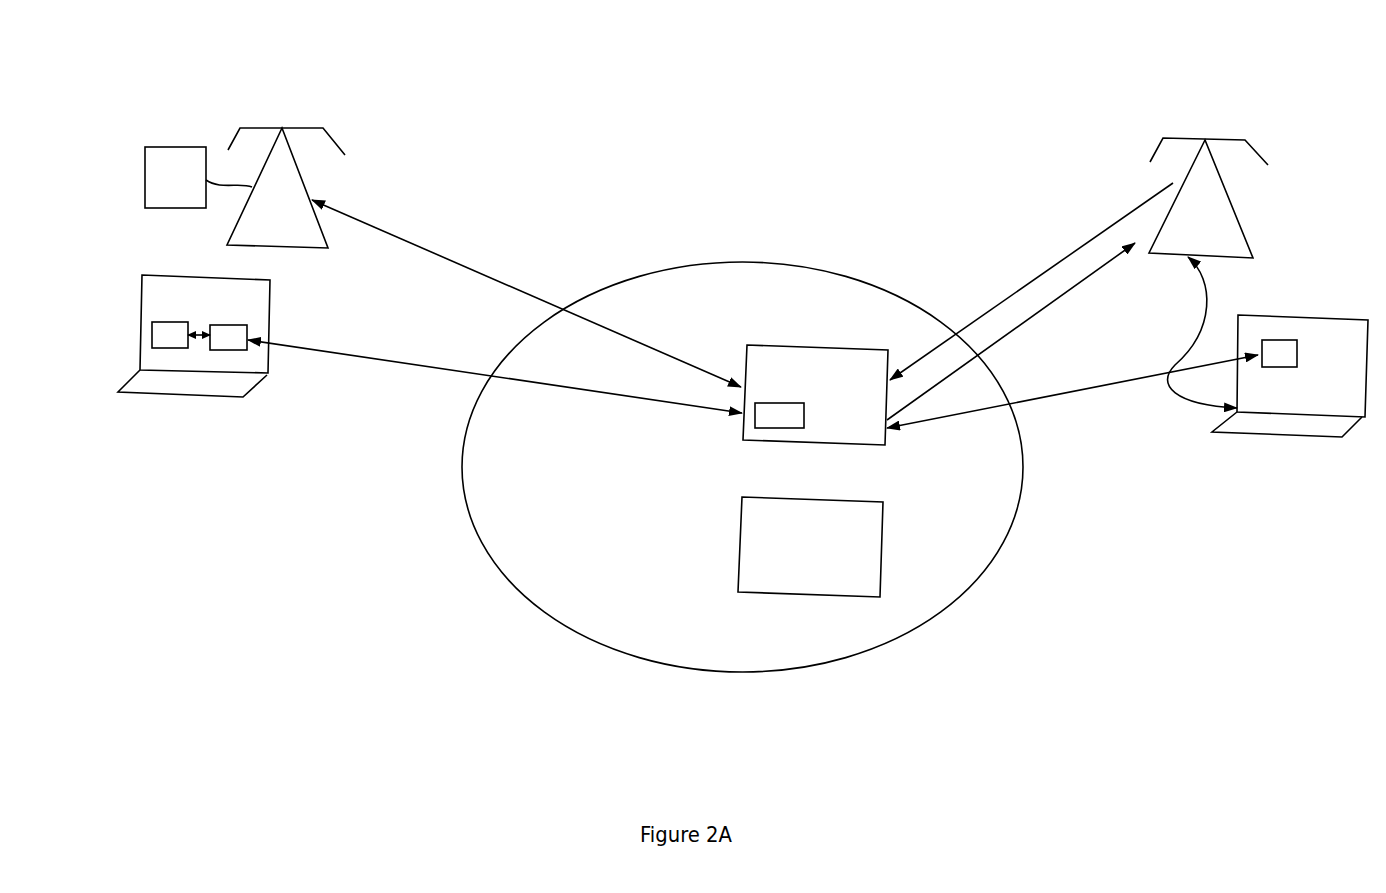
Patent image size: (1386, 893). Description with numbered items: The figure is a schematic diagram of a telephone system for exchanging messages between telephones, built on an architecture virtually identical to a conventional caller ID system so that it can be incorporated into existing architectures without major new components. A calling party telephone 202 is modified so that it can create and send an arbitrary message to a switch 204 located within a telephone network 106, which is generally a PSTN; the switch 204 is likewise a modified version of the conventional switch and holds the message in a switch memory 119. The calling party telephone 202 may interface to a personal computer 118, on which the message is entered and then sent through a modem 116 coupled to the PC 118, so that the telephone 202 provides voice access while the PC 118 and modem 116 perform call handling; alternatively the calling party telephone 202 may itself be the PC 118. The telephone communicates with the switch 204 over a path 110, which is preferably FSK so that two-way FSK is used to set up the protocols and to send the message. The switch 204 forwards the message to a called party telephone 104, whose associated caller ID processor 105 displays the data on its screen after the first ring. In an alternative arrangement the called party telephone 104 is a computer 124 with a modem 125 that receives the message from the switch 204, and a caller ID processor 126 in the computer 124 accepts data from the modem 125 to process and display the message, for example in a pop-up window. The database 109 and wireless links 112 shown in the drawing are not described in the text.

The called party telephone 104 is at (323, 118).
The caller ID processor 105 is at (177, 147).
The telephone network 106 is at (450, 485).
The database 109 is at (742, 545).
The path 110 is at (1032, 262).
The wireless communication link 112 is at (482, 263).
The modem 116 is at (1285, 340).
The personal computer 118 is at (1272, 437).
The switch memory 119 is at (780, 428).
The computer 124 is at (140, 322).
The modem 125 is at (223, 325).
The caller ID processor 126 is at (152, 337).
The calling party telephone 202 is at (1140, 160).
The switch 204 is at (820, 348).